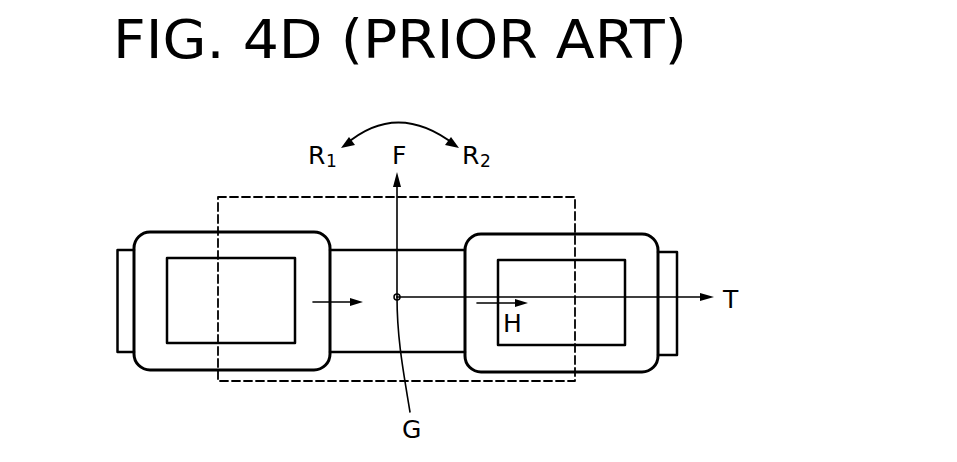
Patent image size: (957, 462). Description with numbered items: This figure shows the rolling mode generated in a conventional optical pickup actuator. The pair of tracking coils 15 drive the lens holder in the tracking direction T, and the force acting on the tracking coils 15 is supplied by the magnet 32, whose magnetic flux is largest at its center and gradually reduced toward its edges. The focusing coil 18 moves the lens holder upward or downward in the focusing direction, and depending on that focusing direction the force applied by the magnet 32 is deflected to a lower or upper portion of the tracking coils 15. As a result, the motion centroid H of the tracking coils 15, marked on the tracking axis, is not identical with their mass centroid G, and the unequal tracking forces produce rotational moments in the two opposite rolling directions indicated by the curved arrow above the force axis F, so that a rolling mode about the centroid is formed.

The tracking coils 15 is at (177, 243).
The focusing coil 18 is at (115, 291).
The magnet 32 is at (565, 212).